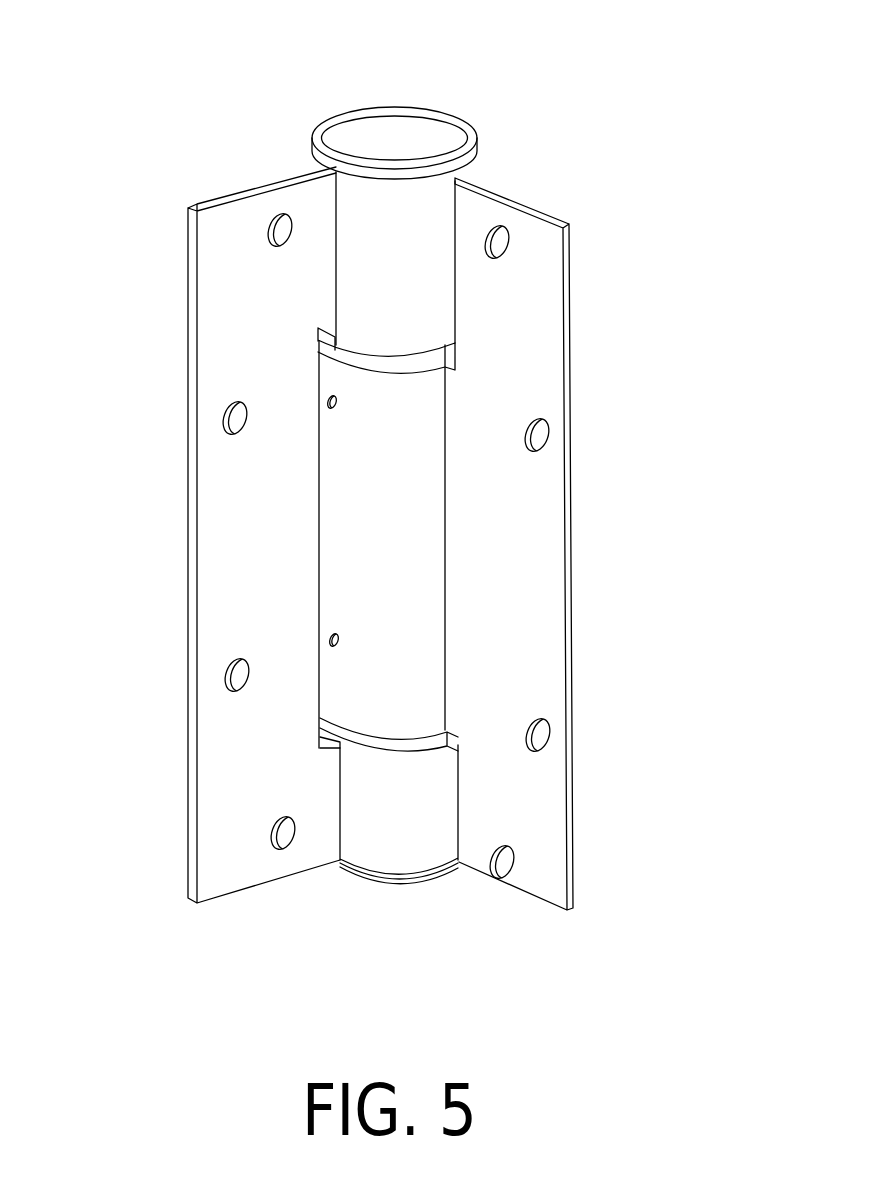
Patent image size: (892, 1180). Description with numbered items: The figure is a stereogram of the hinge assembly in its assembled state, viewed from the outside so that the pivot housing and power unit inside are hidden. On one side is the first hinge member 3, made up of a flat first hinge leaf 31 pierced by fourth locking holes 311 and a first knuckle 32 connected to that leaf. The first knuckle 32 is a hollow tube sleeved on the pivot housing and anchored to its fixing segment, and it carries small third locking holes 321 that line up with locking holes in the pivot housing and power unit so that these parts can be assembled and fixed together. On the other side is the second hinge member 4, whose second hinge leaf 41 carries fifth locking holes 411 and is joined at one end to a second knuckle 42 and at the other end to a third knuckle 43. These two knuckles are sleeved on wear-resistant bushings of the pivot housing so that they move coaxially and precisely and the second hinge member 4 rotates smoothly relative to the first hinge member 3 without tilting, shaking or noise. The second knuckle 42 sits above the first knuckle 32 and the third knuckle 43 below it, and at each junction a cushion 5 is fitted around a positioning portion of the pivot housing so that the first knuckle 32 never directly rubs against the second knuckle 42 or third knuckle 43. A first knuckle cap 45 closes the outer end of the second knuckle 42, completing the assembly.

The first hinge member 3 is at (580, 506).
The first hinge leaf 31 is at (547, 515).
The fourth locking hole 311 is at (498, 237).
The first knuckle 32 is at (484, 656).
The third locking hole 321 is at (340, 650).
The second hinge member 4 is at (192, 535).
The second hinge leaf 41 is at (232, 588).
The fifth locking hole 411 is at (227, 412).
The second knuckle 42 is at (337, 179).
The third knuckle 43 is at (367, 847).
The first knuckle cap 45 is at (423, 140).
The cushion 5 is at (442, 357).